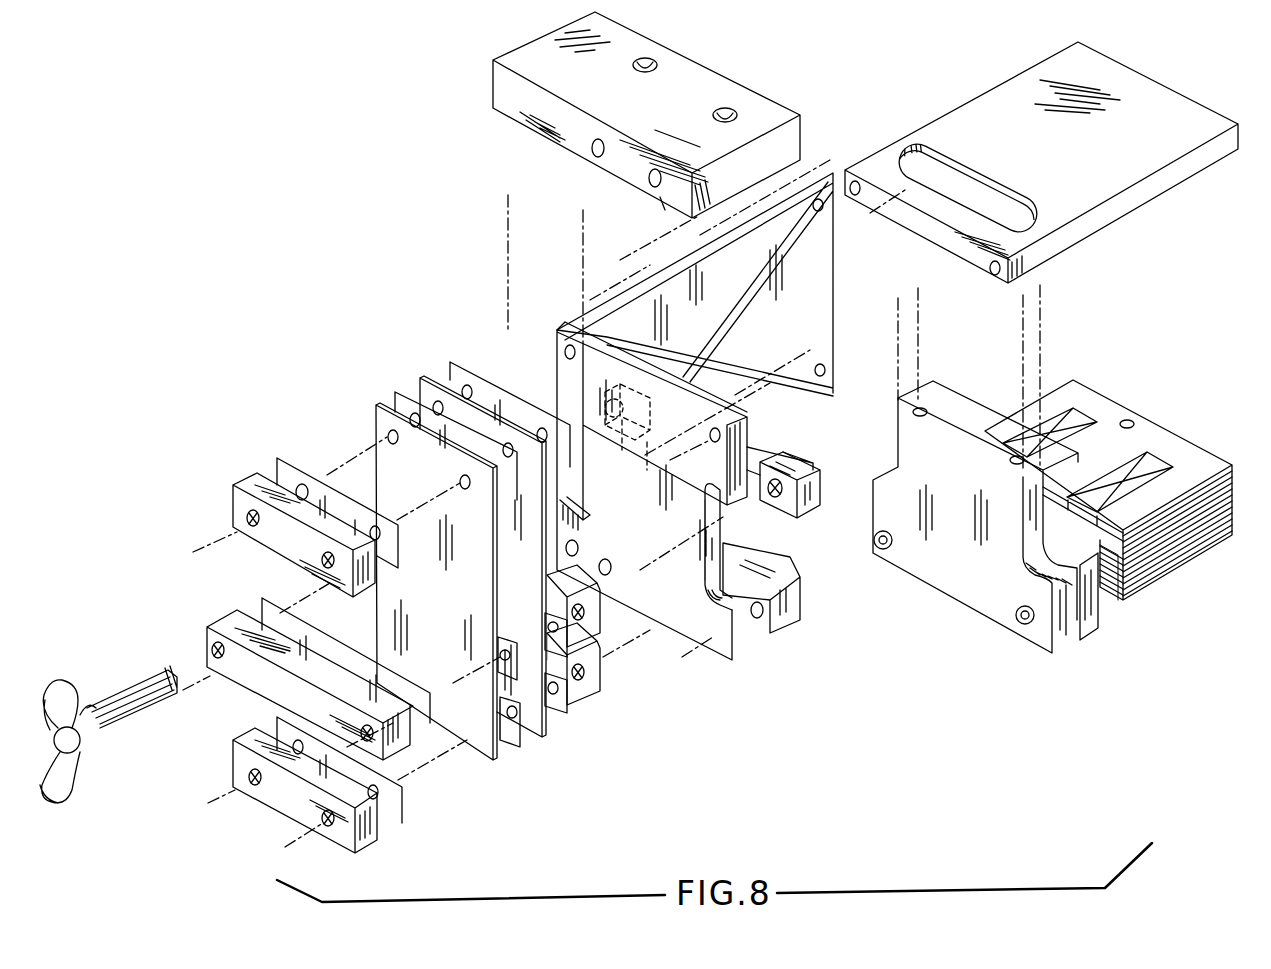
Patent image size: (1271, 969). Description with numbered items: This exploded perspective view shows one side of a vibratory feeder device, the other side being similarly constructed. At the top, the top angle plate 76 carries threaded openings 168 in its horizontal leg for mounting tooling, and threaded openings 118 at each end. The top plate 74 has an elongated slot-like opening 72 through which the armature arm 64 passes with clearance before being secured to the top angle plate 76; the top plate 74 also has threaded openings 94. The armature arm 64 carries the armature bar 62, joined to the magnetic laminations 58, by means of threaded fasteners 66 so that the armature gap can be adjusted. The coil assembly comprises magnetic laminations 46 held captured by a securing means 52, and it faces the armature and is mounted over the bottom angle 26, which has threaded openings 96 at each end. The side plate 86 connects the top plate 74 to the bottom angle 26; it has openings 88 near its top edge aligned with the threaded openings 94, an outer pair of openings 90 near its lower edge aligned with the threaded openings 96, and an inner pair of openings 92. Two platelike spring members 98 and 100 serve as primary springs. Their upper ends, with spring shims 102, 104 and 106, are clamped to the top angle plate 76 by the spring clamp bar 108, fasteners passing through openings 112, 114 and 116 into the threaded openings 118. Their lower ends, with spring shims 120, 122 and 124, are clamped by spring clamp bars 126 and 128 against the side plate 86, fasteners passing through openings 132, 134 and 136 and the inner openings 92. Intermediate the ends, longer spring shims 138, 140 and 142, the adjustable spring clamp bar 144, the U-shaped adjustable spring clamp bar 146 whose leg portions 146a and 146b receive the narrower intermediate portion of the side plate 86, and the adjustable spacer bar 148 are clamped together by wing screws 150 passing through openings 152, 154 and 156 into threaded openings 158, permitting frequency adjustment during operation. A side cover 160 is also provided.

The bottom angle 26 is at (808, 600).
The magnetic laminations 46 is at (1160, 558).
The securing means 52 is at (1135, 424).
The magnetic laminations 58 is at (1112, 605).
The armature bar 62 is at (1088, 628).
The armature arm 64 is at (940, 588).
The threaded fasteners 66 is at (882, 549).
The opening 72 is at (982, 178).
The top plate 74 is at (962, 102).
The top angle plate 76 is at (722, 78).
The side plate 86 is at (725, 652).
The openings 88 is at (556, 342).
The outer pair of openings 90 is at (576, 541).
The inner pair of openings 92 is at (609, 560).
The threaded openings 94 is at (858, 196).
The threaded openings 96 is at (764, 618).
The spring member 98 is at (526, 530).
The spring member 100 is at (462, 590).
The spring shim 102 is at (450, 362).
The spring shim 104 is at (395, 394).
The spring shim 106 is at (280, 456).
The spring clamp bar 108 is at (240, 478).
The openings 112 is at (246, 515).
The openings 114 is at (436, 400).
The openings 116 is at (303, 484).
The threaded openings 118 is at (650, 181).
The spring shim 120 is at (575, 680).
The spring shim 122 is at (520, 744).
The spring shim 124 is at (402, 812).
The spring clamp bar 126 is at (232, 740).
The spring clamp bar 128 is at (600, 673).
The openings 132 is at (248, 775).
The openings 134 is at (545, 712).
The openings 136 is at (380, 795).
The spring shim 138 is at (547, 612).
The spring shim 140 is at (497, 640).
The spring shim 142 is at (262, 600).
The adjustable spring clamp bar 144 is at (215, 615).
The adjustable spring clamp bar 146 is at (795, 444).
The leg portion 146a is at (802, 508).
The leg portion 146b is at (672, 453).
The adjustable spacer bar 148 is at (600, 620).
The wing screws 150 is at (128, 696).
The openings 152 is at (217, 660).
The openings 154 is at (320, 563).
The openings 156 is at (585, 618).
The threaded openings 158 is at (776, 498).
The side cover 160 is at (665, 266).
The openings 168 is at (716, 116).